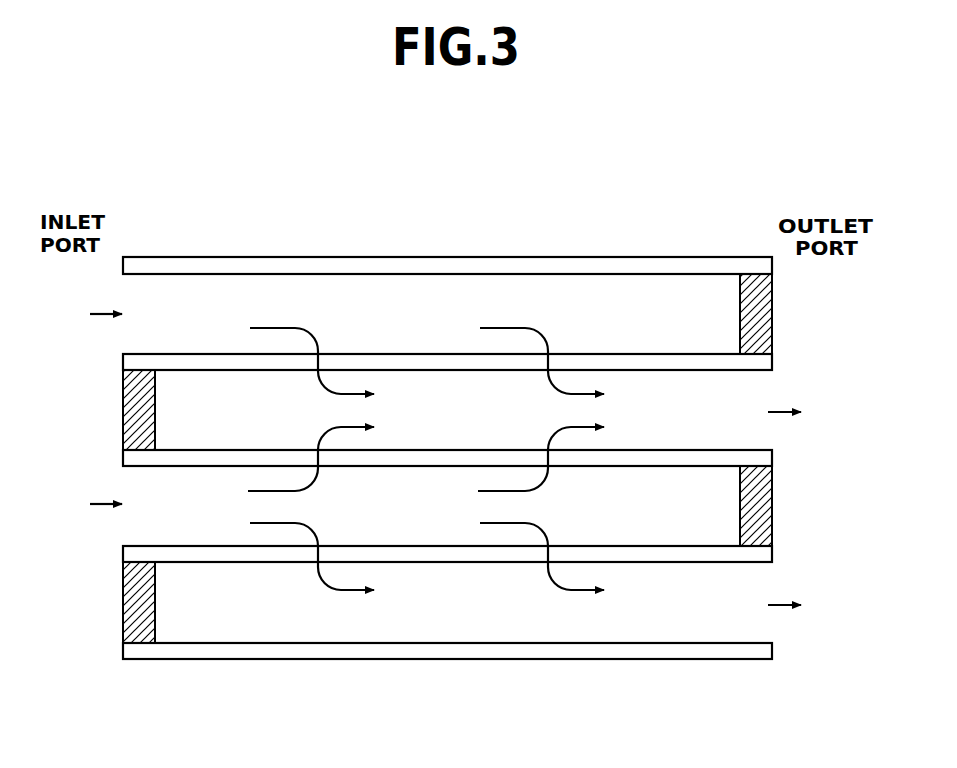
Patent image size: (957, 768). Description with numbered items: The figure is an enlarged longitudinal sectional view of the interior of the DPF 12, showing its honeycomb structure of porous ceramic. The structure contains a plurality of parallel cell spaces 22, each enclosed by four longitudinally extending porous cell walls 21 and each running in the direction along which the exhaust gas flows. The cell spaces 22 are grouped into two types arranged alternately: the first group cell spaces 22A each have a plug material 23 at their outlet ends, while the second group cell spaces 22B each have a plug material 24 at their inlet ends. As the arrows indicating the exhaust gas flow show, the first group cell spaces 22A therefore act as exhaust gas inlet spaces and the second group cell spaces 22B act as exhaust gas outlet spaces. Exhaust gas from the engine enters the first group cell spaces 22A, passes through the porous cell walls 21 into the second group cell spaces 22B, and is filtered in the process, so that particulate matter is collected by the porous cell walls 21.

The DPF 12 is at (727, 221).
The porous cell wall 21 is at (262, 257).
The cell space 22 is at (353, 297).
The first group cell space 22A is at (411, 511).
The second group cell space 22B is at (625, 403).
The plug material 23 is at (772, 316).
The plug material 24 is at (122, 405).